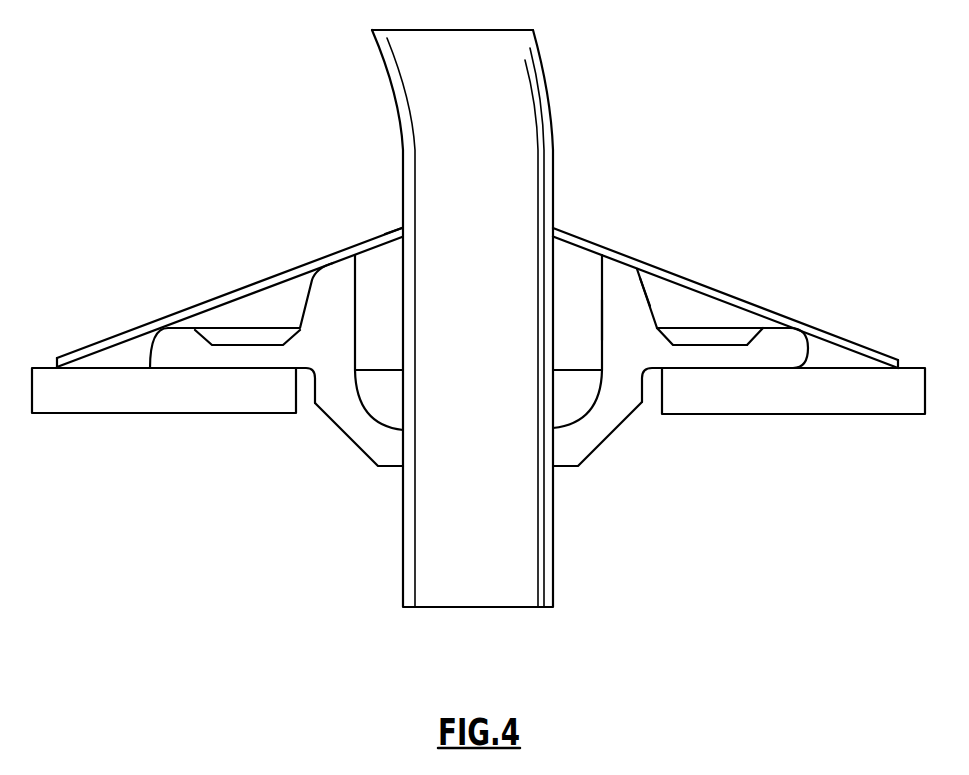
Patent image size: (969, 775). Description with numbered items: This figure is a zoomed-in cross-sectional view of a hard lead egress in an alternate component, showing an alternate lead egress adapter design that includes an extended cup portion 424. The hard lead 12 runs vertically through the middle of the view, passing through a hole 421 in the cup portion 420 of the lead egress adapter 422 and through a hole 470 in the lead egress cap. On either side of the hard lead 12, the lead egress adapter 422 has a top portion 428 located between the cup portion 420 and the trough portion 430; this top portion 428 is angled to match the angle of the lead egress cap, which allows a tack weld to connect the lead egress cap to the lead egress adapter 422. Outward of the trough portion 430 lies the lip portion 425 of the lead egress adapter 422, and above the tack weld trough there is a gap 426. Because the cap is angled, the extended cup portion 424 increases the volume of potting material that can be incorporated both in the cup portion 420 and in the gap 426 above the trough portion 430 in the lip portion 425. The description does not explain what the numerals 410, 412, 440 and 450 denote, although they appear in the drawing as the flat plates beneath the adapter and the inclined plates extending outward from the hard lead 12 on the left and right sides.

The hard lead 12 is at (542, 142).
The mounting plate assembly 410 is at (305, 401).
The mounting plate 412 is at (85, 403).
The cup portion 420 is at (383, 395).
The hole 421 is at (402, 468).
The lead egress adapter 422 is at (602, 430).
The extended cup portion 424 is at (590, 260).
The lip portion 425 is at (677, 357).
The gap 426 is at (668, 288).
The top portion 428 is at (623, 272).
The trough portion 430 is at (745, 330).
The inclined plate 440 is at (830, 350).
The inclined plate 450 is at (332, 257).
The hole 470 is at (403, 228).